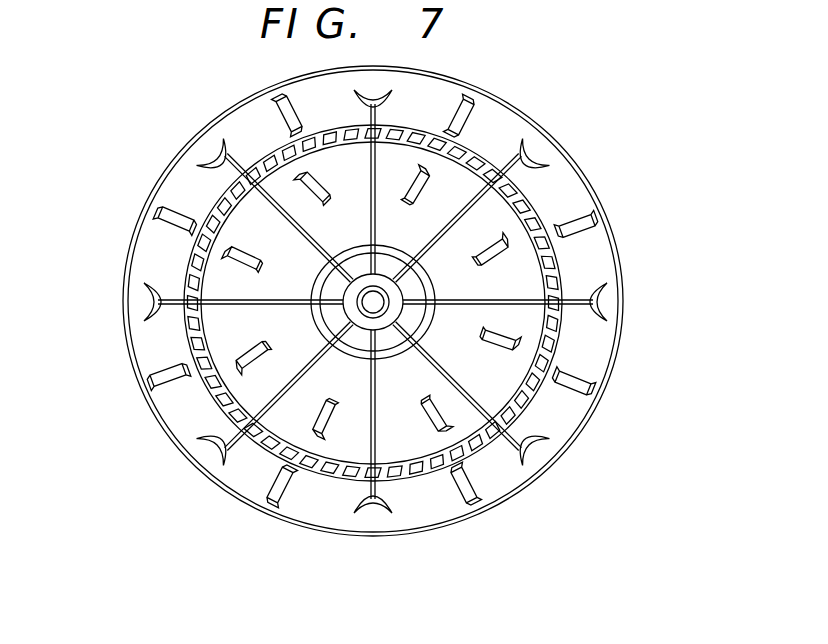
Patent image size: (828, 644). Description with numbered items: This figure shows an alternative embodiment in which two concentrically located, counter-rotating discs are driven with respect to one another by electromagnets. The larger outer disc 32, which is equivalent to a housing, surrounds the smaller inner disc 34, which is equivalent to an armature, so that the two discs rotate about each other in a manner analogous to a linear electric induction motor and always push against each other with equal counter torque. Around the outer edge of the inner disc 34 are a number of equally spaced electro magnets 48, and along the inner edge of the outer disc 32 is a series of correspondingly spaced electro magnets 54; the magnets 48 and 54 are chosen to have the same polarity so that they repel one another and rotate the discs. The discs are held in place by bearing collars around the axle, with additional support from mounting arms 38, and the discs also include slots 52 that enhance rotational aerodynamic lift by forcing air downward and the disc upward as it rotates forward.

The outer disc 32 is at (567, 193).
The inner disc 34 is at (487, 215).
The mounting arm 38 is at (610, 300).
The electro magnets 48 is at (188, 350).
The slots 52 is at (150, 380).
The electro magnets 54 is at (272, 155).